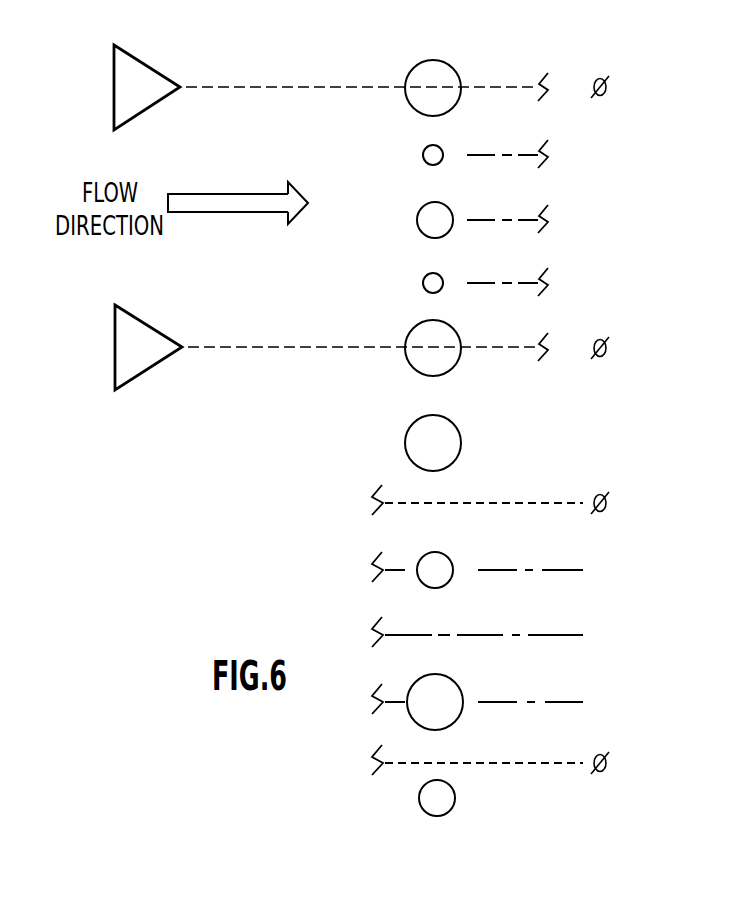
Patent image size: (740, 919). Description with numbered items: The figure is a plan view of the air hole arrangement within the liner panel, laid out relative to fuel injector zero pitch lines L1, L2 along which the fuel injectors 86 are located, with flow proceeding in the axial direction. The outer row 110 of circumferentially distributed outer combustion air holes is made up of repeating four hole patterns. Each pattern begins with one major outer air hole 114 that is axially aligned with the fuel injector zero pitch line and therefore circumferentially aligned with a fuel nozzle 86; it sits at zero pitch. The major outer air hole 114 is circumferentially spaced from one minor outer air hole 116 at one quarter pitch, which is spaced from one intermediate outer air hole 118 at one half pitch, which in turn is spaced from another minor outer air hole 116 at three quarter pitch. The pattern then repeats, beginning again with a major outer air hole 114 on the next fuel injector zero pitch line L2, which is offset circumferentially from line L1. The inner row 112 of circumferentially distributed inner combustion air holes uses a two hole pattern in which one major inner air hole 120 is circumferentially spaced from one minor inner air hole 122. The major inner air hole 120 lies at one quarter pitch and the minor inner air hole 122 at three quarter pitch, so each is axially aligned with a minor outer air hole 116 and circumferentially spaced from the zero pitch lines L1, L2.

The fuel injector 86 is at (152, 98).
The fuel injector zero pitch line L2 is at (258, 86).
The fuel injector zero pitch line L1 is at (250, 346).
The outer row 110 is at (430, 53).
The inner row 112 is at (414, 416).
The major outer air hole 114 is at (455, 70).
The minor outer air hole 116 is at (442, 150).
The intermediate outer air hole 118 is at (450, 211).
The major inner air hole 120 is at (461, 451).
The minor inner air hole 122 is at (448, 582).